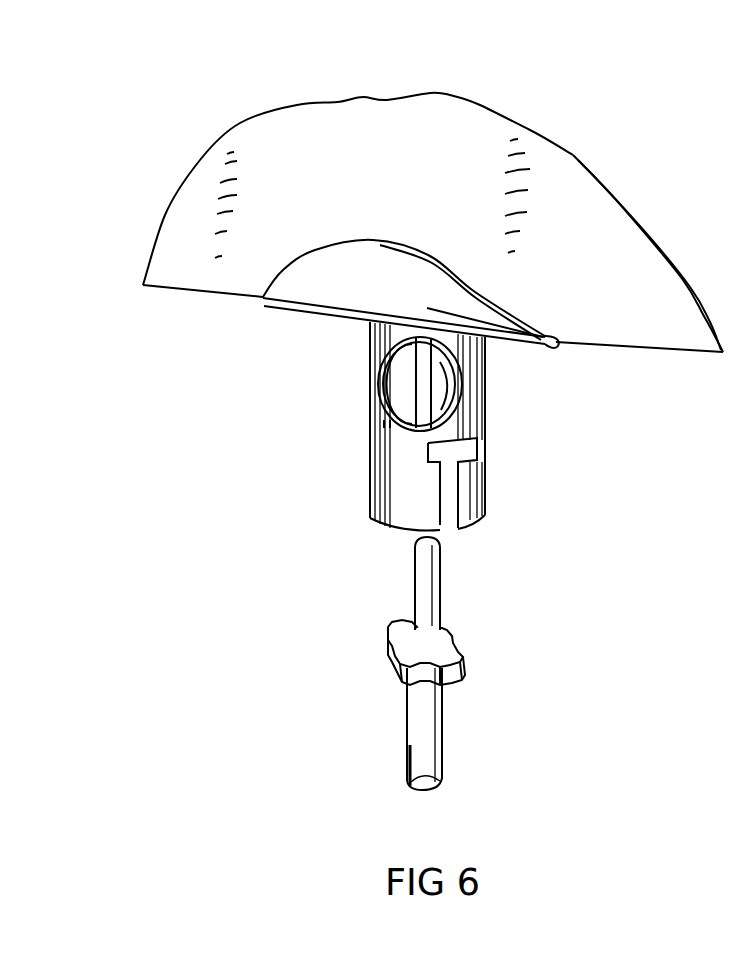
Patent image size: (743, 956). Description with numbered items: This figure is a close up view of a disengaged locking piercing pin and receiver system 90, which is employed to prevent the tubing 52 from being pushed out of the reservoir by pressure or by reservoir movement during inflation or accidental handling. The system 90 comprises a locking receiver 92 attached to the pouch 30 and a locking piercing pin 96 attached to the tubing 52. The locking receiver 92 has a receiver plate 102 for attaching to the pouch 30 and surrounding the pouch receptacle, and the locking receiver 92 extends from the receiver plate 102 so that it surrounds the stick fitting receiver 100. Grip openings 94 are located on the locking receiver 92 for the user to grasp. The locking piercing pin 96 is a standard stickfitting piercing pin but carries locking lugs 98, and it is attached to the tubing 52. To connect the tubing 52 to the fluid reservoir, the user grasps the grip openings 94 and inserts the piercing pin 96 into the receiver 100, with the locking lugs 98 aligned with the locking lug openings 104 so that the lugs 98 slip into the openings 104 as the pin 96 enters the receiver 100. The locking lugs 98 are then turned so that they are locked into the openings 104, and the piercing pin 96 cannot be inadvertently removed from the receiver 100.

The pouch 30 is at (400, 199).
The tubing 52 is at (423, 735).
The locking piercing pin and receiver system 90 is at (384, 503).
The locking receiver 92 is at (384, 426).
The grip openings 94 is at (395, 353).
The locking piercing pin 96 is at (427, 573).
The locking lugs 98 is at (462, 655).
The stick fitting receiver 100 is at (423, 384).
The receiver plate 102 is at (303, 280).
The locking lug openings 104 is at (385, 424).